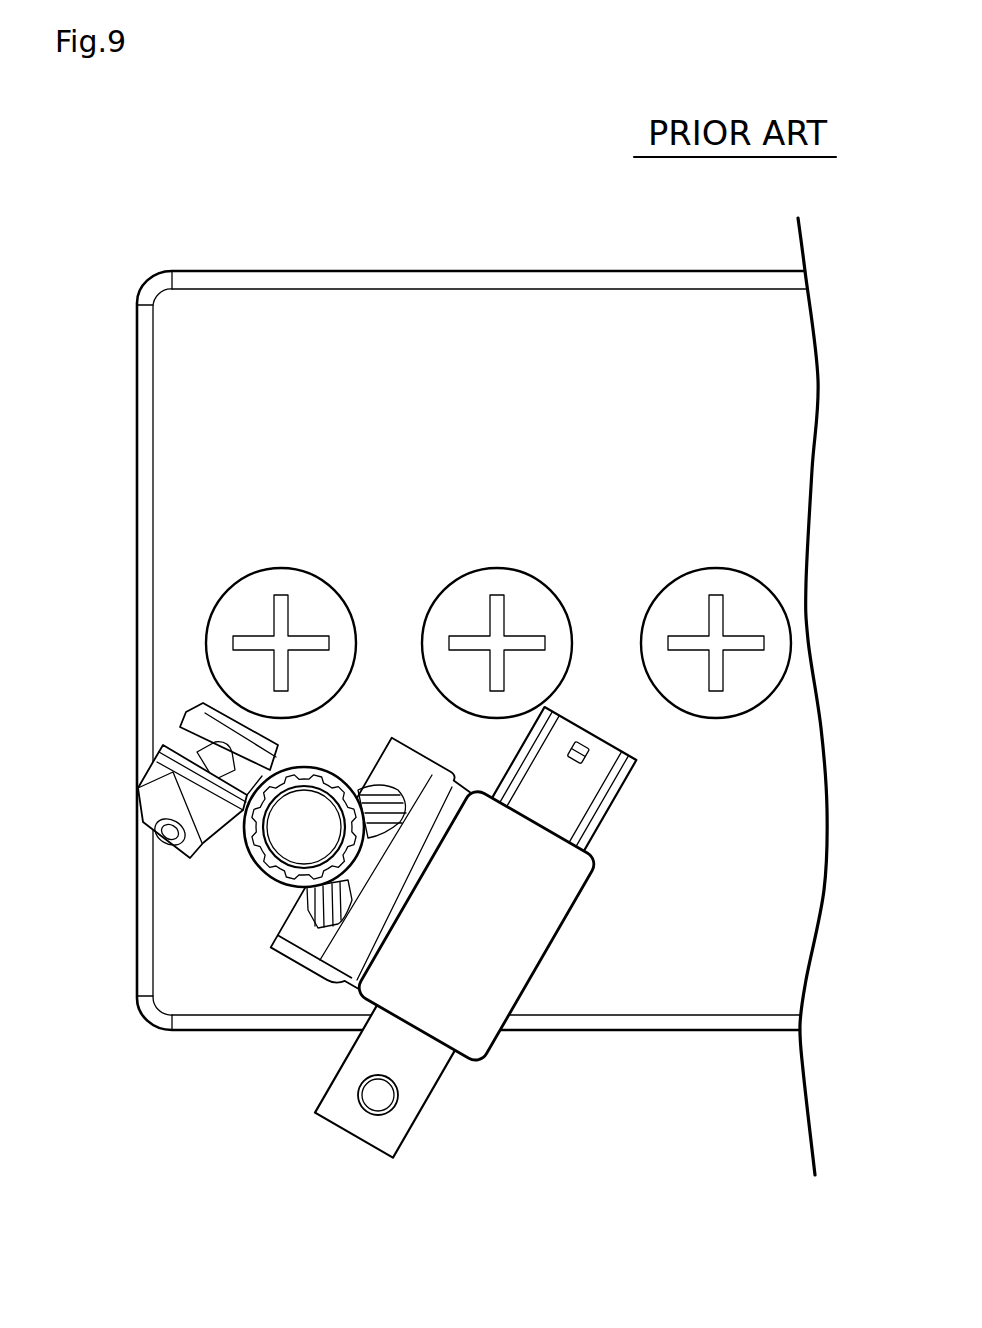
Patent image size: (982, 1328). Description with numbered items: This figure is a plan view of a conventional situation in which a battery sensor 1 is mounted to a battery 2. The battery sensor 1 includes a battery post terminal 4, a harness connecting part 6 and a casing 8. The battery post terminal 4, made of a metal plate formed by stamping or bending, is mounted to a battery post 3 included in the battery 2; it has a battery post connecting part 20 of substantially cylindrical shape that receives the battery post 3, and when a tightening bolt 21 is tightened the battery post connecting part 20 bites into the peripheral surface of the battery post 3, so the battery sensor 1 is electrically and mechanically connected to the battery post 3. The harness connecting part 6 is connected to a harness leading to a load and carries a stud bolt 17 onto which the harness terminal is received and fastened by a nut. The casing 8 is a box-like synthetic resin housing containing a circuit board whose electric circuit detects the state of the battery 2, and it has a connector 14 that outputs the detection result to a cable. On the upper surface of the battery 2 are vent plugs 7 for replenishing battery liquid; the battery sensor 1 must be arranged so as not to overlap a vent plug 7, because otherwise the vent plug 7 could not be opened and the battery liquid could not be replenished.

The battery sensor 1 is at (430, 926).
The battery 2 is at (597, 330).
The battery post 3 is at (303, 805).
The battery post terminal 4 is at (254, 994).
The harness connecting part 6 is at (389, 1092).
The vent plug 7 is at (303, 587).
The casing 8 is at (543, 930).
The connector 14 is at (580, 732).
The bolt 17 is at (373, 1100).
The battery post connecting part 20 is at (293, 826).
The tightening bolt 21 is at (192, 850).